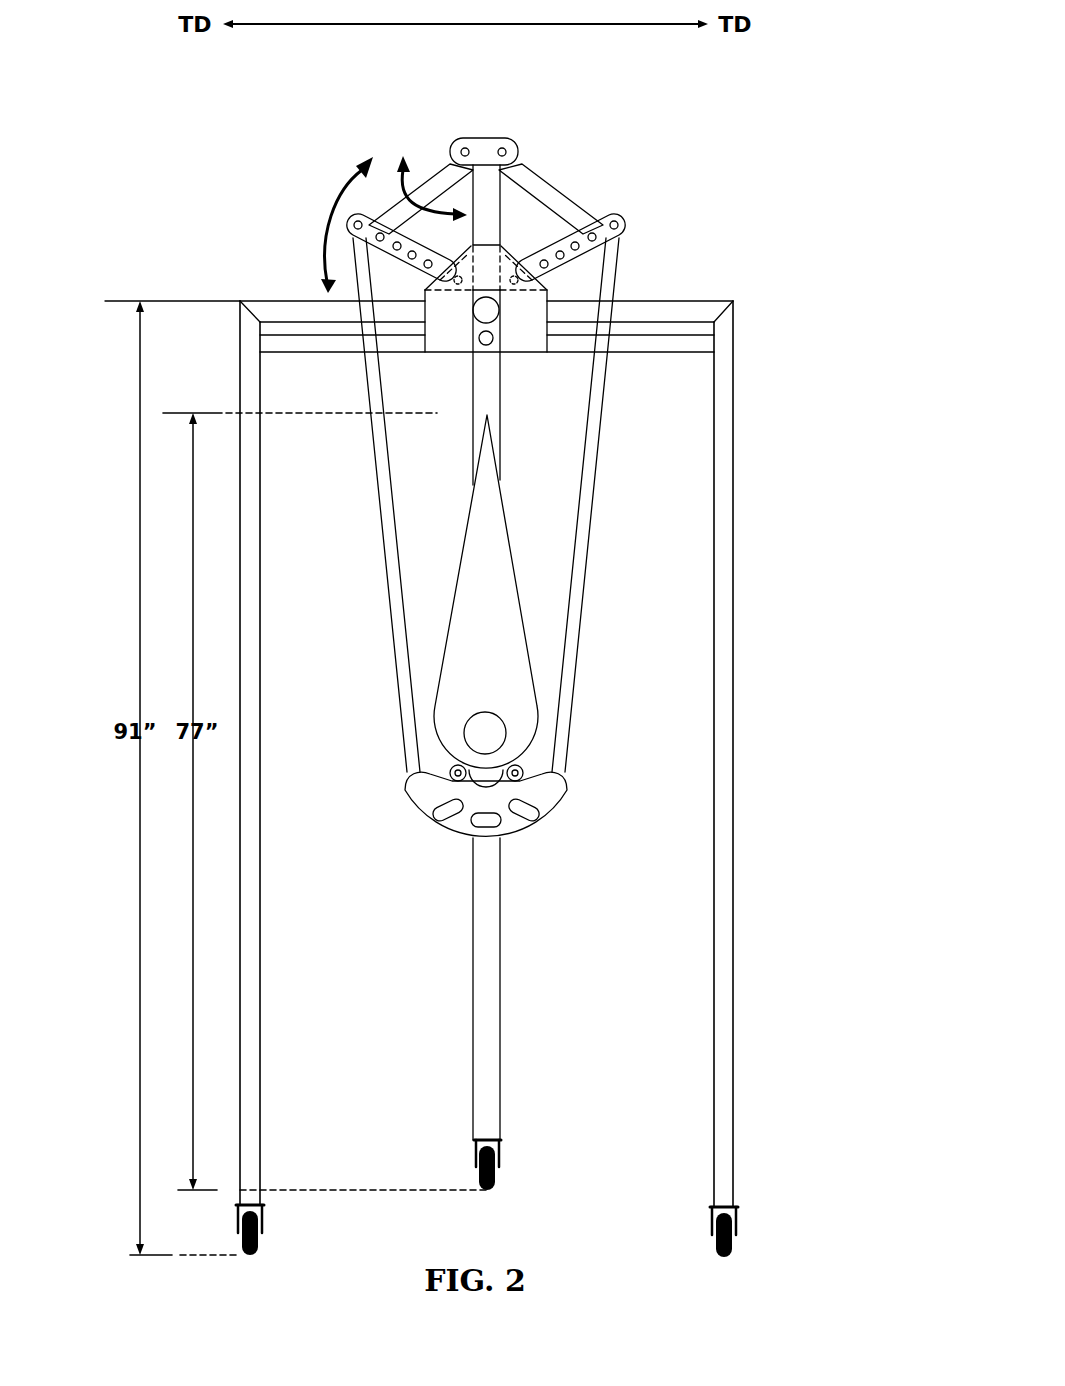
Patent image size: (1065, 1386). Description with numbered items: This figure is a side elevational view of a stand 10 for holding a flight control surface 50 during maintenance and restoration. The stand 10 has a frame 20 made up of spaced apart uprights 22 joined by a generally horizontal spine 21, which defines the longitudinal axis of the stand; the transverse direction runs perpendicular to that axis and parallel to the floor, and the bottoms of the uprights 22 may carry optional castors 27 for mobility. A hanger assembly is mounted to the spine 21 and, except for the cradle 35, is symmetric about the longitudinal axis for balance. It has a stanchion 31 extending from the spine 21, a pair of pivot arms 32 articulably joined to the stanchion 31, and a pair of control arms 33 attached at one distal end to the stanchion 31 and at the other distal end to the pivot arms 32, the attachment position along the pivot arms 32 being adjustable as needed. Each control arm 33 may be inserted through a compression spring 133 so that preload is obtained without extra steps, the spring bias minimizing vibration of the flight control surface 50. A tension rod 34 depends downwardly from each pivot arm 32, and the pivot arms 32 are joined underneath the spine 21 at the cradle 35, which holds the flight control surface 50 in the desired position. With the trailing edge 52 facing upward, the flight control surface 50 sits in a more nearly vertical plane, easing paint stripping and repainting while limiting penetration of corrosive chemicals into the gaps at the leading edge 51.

The stand 10 is at (780, 798).
The frame 20 is at (292, 300).
The spine 21 is at (493, 338).
The uprights 22 is at (242, 660).
The castors 27 is at (259, 1237).
The stanchion 31 is at (478, 167).
The pivot arms 32 is at (390, 240).
The control arms 33 is at (447, 178).
The compression spring 133 is at (567, 211).
The tension rod 34 is at (393, 578).
The cradle 35 is at (425, 792).
The flight control surface 50 is at (473, 640).
The leading edge 51 is at (492, 774).
The trailing edge 52 is at (487, 417).